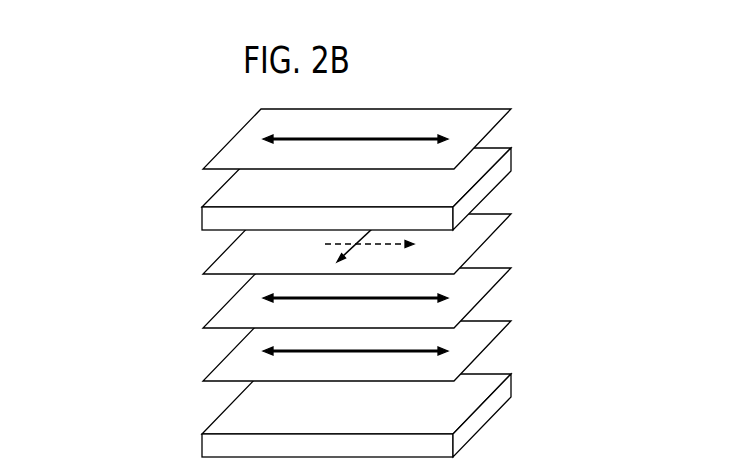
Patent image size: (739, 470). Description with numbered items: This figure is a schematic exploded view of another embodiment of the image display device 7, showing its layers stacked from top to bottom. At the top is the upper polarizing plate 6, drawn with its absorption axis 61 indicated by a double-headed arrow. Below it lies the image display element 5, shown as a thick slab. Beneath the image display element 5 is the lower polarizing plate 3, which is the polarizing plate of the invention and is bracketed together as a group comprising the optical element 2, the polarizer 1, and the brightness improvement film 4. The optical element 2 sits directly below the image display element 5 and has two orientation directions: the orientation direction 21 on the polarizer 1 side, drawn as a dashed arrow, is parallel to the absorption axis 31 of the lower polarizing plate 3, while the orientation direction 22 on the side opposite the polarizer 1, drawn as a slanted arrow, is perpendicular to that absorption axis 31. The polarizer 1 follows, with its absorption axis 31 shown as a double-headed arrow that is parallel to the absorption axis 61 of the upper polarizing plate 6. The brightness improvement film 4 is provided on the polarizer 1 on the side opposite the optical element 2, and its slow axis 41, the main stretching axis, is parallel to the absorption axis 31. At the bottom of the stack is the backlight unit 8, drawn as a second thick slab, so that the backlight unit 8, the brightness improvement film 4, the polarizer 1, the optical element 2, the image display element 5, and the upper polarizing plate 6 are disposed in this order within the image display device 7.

The image display device 7 is at (59, 104).
The lower polarizing plate 3 is at (116, 256).
The upper polarizing plate 6 is at (204, 168).
The absorption axis 61 is at (370, 139).
The image display element 5 is at (214, 215).
The optical element 2 is at (205, 274).
The orientation direction 21 is at (413, 243).
The orientation direction 22 is at (340, 262).
The polarizer 1 is at (205, 327).
The absorption axis 31 is at (370, 297).
The brightness improvement film 4 is at (205, 381).
The slow axis 41 is at (370, 351).
The backlight unit 8 is at (215, 443).